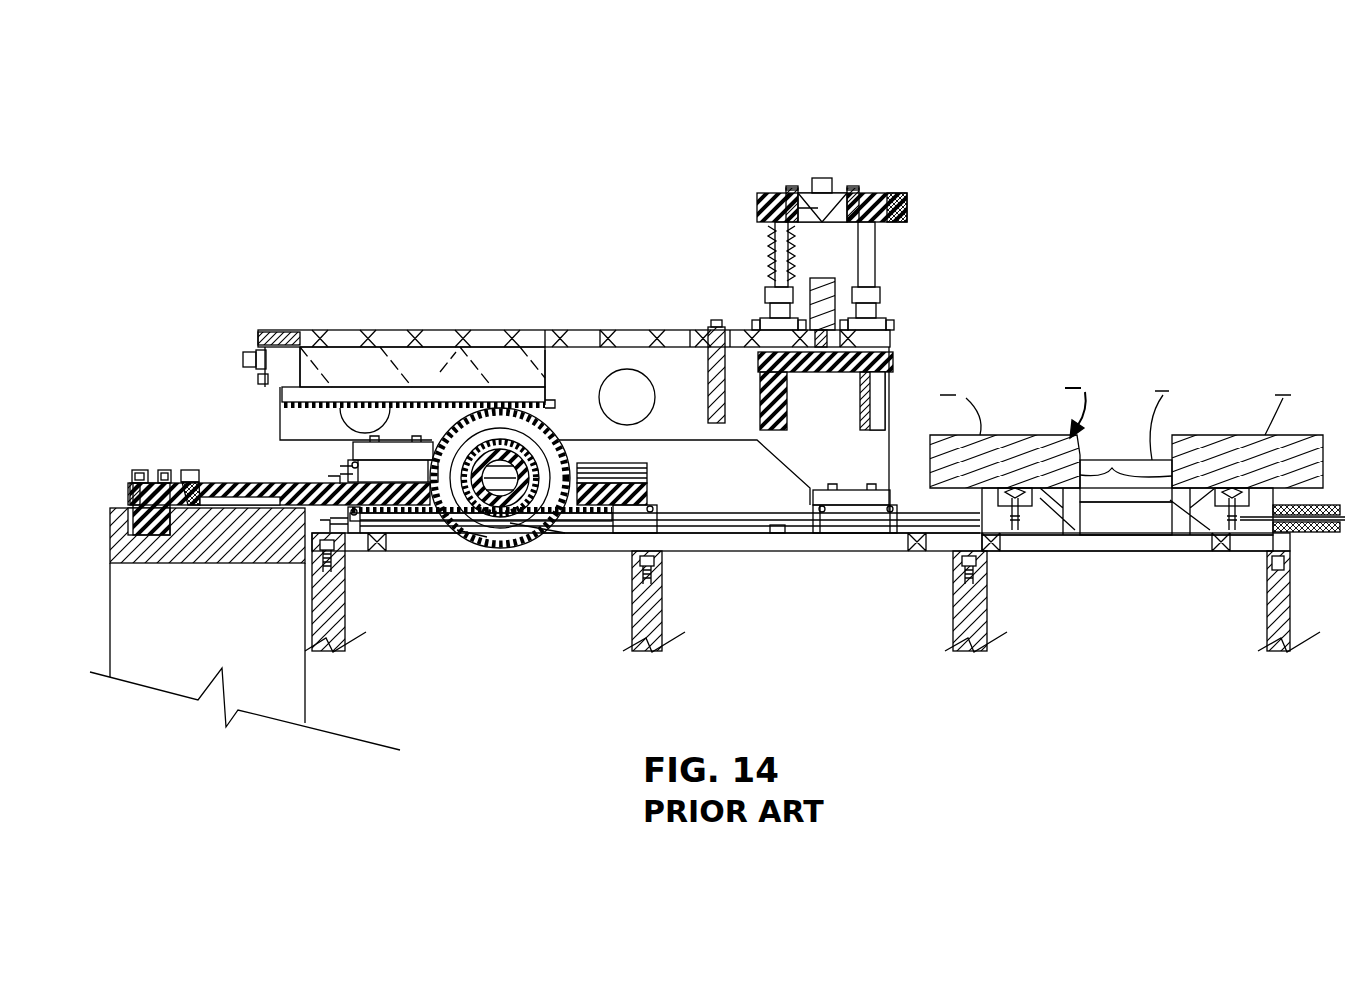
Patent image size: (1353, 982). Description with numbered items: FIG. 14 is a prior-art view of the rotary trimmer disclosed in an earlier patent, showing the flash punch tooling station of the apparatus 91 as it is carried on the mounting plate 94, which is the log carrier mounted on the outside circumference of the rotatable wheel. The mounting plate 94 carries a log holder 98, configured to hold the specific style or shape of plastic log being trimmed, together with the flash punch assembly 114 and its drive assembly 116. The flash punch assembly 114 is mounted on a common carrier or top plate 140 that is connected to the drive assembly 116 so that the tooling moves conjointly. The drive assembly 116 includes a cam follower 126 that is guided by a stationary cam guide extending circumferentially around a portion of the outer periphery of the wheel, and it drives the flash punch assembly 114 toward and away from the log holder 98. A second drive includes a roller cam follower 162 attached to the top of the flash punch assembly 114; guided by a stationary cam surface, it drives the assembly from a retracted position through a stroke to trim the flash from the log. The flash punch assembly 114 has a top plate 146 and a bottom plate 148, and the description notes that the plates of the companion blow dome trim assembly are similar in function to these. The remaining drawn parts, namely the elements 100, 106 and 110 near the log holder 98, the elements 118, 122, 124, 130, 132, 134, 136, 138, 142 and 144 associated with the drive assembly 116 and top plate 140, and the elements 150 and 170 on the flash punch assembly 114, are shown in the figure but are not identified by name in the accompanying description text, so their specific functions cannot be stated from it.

The prior art rack and pinion positioning apparatus 91 is at (318, 185).
The mounting plate 94 is at (917, 552).
The log holder 98 is at (1075, 495).
The filter element 100 is at (1113, 490).
The filter support block 106 is at (1103, 515).
The base 110 is at (1138, 540).
The flash punch assembly 114 is at (824, 270).
The drive assembly 116 is at (222, 470).
The end block 118 is at (110, 530).
The guide rail 122 is at (705, 518).
The plate 124 is at (275, 485).
The cam follower 126 is at (150, 540).
The bearing block 130 is at (540, 465).
The pinion gear 132 is at (548, 430).
The lower rack 134 is at (400, 530).
The upper rack 136 is at (357, 392).
The frame 138 is at (512, 318).
The top plate 140 is at (440, 340).
The lower frame arm 142 is at (700, 440).
The linear bearing carriage 144 is at (345, 466).
The top plate 146 is at (757, 212).
The bottom plate 148 is at (900, 356).
The guide rods 150 is at (870, 238).
The roller cam follower 162 is at (822, 178).
The knob 170 is at (897, 195).